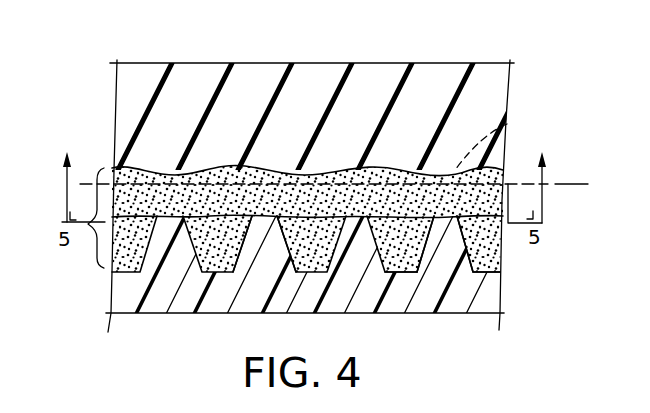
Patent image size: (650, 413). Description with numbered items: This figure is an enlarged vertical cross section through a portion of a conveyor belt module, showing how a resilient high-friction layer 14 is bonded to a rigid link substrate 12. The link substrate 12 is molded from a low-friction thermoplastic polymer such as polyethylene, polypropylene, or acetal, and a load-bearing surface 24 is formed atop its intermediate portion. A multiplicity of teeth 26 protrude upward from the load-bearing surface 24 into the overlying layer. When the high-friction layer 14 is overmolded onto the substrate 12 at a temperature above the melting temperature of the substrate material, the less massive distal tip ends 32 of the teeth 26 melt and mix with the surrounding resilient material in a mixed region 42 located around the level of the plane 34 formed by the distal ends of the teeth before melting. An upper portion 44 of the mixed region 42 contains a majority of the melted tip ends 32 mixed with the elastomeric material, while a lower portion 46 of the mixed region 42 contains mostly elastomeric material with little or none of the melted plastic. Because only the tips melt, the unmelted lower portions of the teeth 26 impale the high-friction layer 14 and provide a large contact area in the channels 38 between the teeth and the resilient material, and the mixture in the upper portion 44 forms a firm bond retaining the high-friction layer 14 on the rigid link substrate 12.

The link substrate 12 is at (165, 308).
The resilient high-friction layer 14 is at (317, 77).
The load-bearing surface 24 is at (239, 281).
The teeth 26 is at (437, 218).
The distal tip ends 32 is at (513, 125).
The plane 34 is at (588, 186).
The channel 38 is at (392, 277).
The mixed region 42 is at (88, 224).
The upper portion of the mixed region 44 is at (503, 172).
The lower portion of the mixed region 46 is at (503, 257).